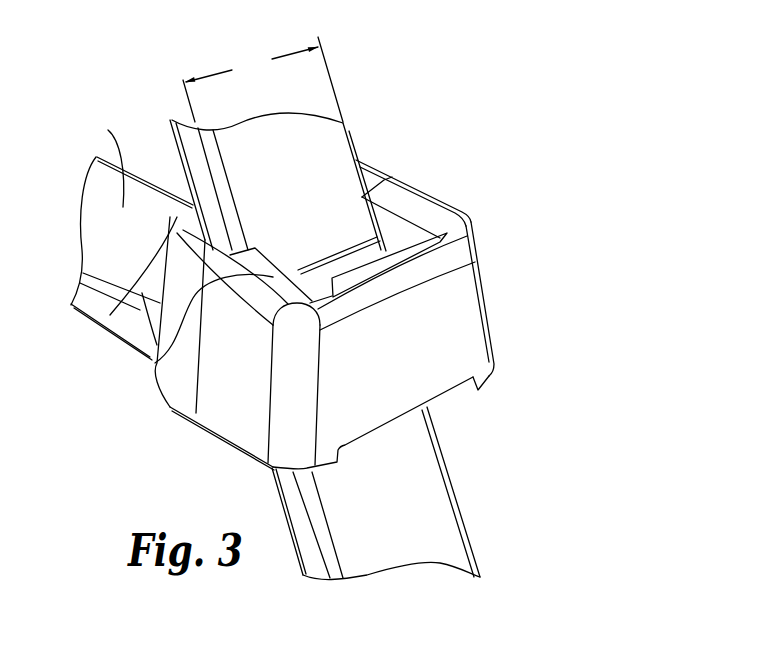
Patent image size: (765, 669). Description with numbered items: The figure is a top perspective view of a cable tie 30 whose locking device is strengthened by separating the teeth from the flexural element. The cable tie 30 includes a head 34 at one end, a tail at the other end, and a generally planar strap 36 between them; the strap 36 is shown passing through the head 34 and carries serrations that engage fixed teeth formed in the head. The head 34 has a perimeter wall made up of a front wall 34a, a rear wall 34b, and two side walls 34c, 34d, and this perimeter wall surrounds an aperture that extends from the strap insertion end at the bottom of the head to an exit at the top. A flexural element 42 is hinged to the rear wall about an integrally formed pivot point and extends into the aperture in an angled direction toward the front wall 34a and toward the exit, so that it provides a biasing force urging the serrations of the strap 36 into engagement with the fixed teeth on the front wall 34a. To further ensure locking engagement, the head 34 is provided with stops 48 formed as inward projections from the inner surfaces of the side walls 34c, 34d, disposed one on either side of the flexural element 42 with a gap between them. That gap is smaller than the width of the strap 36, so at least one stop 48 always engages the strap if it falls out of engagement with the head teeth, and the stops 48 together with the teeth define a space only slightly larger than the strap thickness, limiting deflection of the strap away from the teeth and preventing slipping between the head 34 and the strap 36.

The cable tie 30 is at (605, 254).
The head 34 is at (183, 394).
The front wall 34a is at (133, 293).
The rear wall 34b is at (453, 327).
The side wall 34c is at (433, 198).
The side wall 34d is at (243, 393).
The strap 36 is at (235, 172).
The flexural element 42 is at (450, 236).
The stops 48 is at (391, 192).